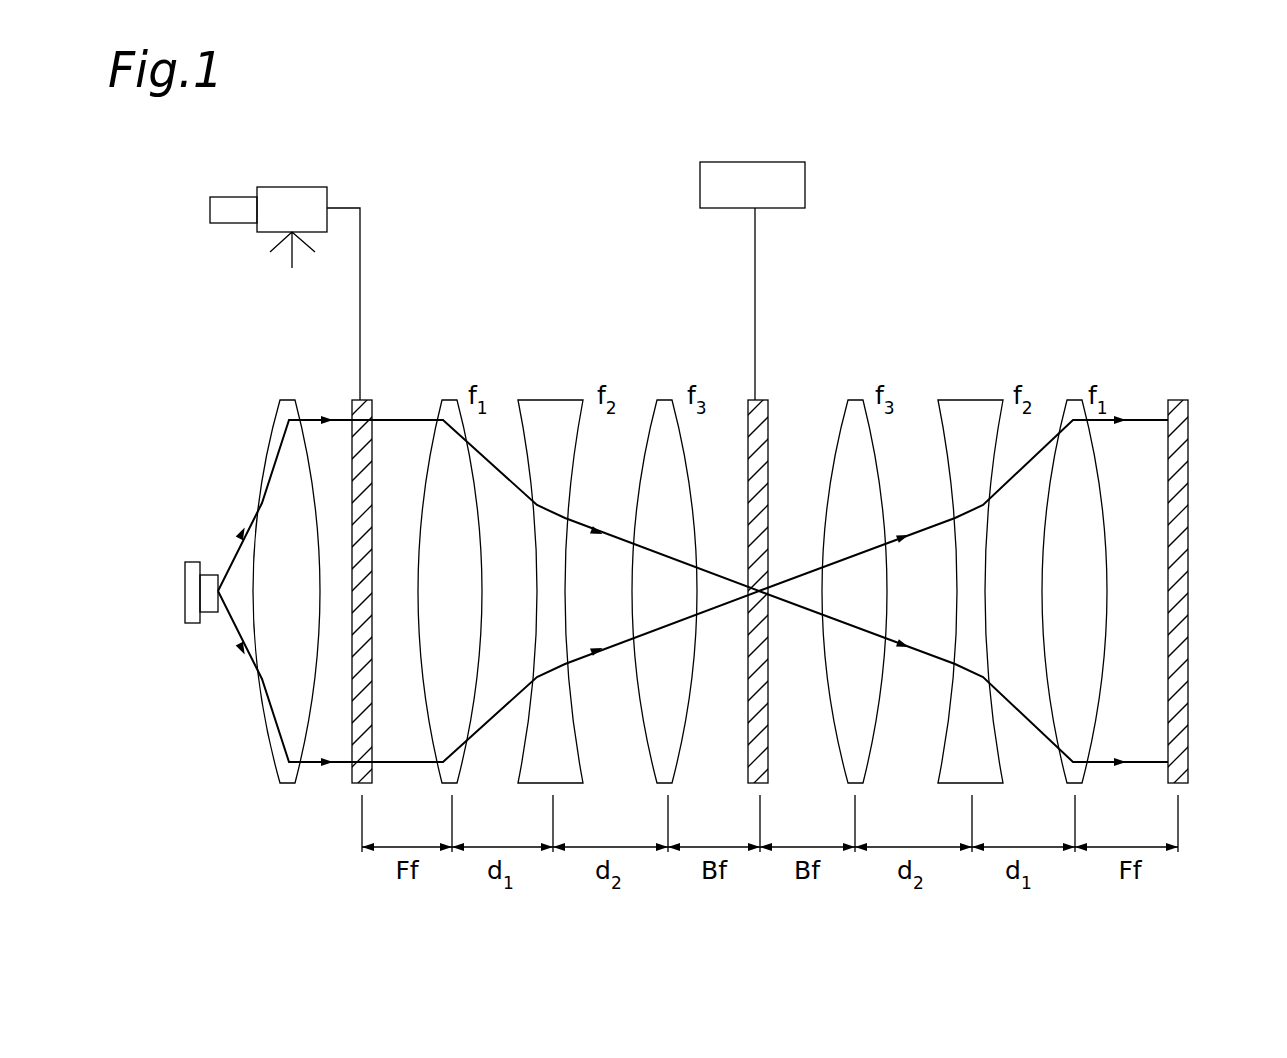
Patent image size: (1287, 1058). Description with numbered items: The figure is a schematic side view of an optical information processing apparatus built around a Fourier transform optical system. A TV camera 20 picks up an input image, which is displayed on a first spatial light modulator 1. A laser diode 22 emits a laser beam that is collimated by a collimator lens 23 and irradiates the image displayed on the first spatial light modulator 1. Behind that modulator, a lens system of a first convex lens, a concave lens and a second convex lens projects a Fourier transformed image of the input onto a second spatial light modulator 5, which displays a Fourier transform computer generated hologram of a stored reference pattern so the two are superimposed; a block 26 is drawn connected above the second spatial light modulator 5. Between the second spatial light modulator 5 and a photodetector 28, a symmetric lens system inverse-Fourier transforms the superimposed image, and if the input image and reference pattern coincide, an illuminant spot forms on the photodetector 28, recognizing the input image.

The first spatial light modulator 1 is at (367, 400).
The second spatial light modulator 5 is at (762, 400).
The TV camera 20 is at (293, 187).
The laser diode 22 is at (195, 625).
The collimator lens 23 is at (292, 785).
The control unit 26 is at (750, 162).
The photodetector 28 is at (1175, 400).